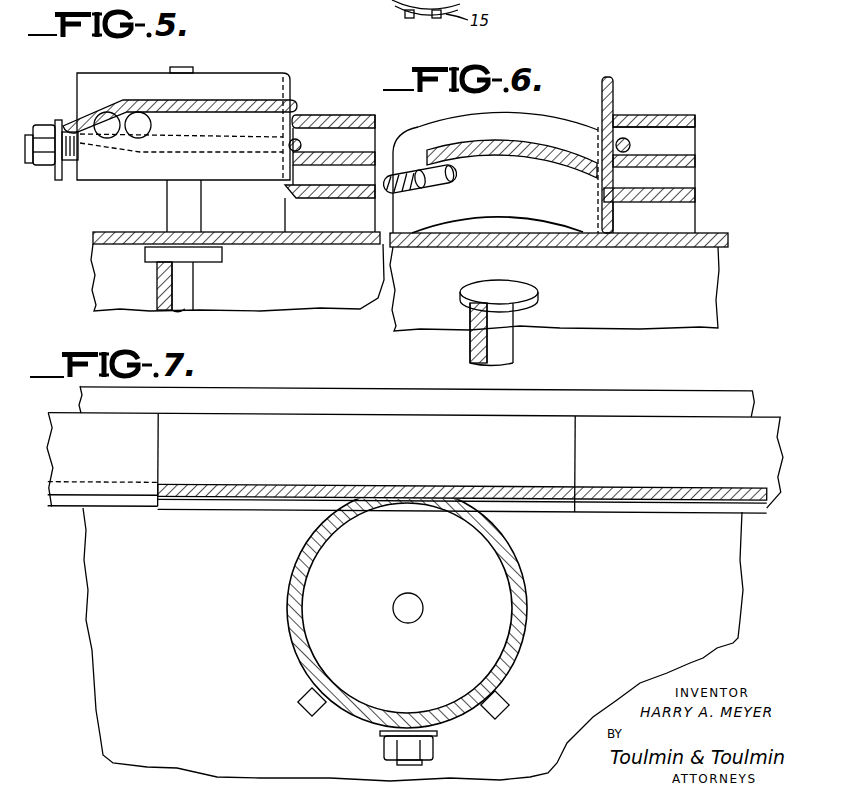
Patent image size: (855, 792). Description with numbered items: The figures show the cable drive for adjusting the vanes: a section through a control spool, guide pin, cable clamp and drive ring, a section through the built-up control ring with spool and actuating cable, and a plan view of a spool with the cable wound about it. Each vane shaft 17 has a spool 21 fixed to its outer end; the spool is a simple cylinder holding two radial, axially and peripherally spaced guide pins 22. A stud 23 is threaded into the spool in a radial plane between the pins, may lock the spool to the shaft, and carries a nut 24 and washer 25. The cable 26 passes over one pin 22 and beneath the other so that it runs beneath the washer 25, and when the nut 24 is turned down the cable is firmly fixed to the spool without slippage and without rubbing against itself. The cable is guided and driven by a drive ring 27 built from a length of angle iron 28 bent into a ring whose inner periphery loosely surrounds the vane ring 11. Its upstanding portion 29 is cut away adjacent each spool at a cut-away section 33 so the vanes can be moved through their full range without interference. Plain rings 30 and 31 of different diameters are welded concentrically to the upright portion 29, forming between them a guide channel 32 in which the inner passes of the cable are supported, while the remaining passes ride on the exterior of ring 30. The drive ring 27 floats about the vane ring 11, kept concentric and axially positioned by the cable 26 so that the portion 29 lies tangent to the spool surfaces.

In FIG. 5, the vane ring 11 is at (318, 294).
In FIG. 6, the vane ring 11 is at (654, 294).
In FIG. 7, the vane ring 11 is at (730, 577).
In FIG. 5, the vane shaft 17 is at (190, 290).
In FIG. 6, the vane shaft 17 is at (508, 351).
In FIG. 7, the vane shaft 17 is at (424, 611).
In FIG. 5, the spool 21 is at (241, 84).
In FIG. 6, the spool 21 is at (535, 128).
In FIG. 7, the spool 21 is at (405, 564).
In FIG. 5, the guide pin 22 is at (120, 140).
In FIG. 6, the guide pin 22 is at (456, 171).
In FIG. 7, the guide pin 22 is at (300, 700).
In FIG. 5, the stud 23 is at (70, 162).
In FIG. 7, the stud 23 is at (422, 770).
In FIG. 5, the nut 24 is at (40, 128).
In FIG. 7, the nut 24 is at (390, 751).
In FIG. 5, the washer 25 is at (58, 182).
In FIG. 7, the washer 25 is at (438, 734).
In FIG. 5, the cable 26 is at (295, 108).
In FIG. 6, the cable 26 is at (556, 164).
In FIG. 7, the cable 26 is at (296, 580).
In FIG. 5, the drive ring 27 is at (285, 198).
In FIG. 6, the drive ring 27 is at (660, 115).
In FIG. 7, the drive ring 27 is at (462, 450).
In FIG. 6, the angle iron 28 is at (680, 196).
In FIG. 6, the upstanding portion 29 is at (613, 78).
In FIG. 7, the upstanding portion 29 is at (130, 508).
In FIG. 5, the plain ring 30 is at (363, 119).
In FIG. 6, the plain ring 30 is at (700, 123).
In FIG. 7, the plain ring 30 is at (106, 463).
In FIG. 5, the plain ring 31 is at (330, 158).
In FIG. 6, the plain ring 31 is at (700, 158).
In FIG. 6, the guide channel 32 is at (685, 142).
In FIG. 7, the cut away section 33 is at (160, 450).